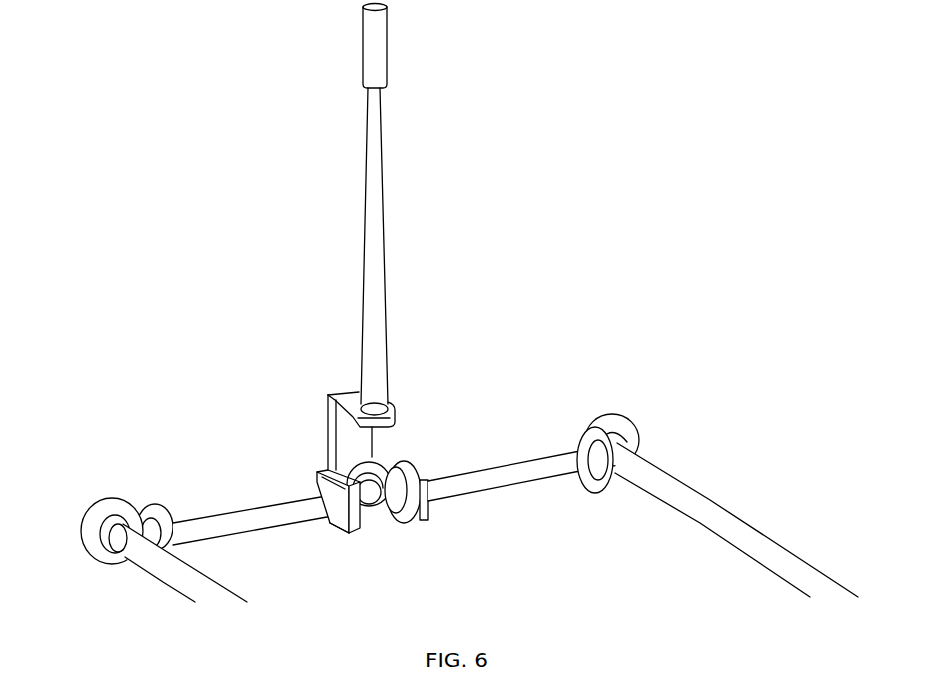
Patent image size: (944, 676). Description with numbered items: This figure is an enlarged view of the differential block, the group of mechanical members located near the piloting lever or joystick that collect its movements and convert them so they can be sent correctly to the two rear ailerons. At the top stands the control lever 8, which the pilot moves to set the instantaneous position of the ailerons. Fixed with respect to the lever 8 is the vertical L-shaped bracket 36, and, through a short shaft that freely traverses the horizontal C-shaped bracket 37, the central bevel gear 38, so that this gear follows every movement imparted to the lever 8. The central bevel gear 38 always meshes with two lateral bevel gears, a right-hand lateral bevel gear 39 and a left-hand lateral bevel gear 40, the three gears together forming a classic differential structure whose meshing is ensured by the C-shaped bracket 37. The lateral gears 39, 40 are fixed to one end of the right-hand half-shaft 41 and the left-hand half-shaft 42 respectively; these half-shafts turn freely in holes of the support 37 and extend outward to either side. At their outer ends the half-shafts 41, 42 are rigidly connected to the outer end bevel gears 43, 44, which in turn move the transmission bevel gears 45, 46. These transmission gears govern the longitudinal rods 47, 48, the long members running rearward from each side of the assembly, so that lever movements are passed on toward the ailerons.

The control lever 8 is at (388, 48).
The vertical L-shaped bracket 36 is at (328, 405).
The horizontal C-shaped bracket 37 is at (316, 478).
The central bevel gear 38 is at (375, 513).
The right-hand lateral bevel gear 39 is at (407, 525).
The left-hand lateral bevel gear 40 is at (350, 533).
The right-hand half-shaft 41 is at (497, 465).
The left-hand half-shaft 42 is at (243, 510).
The outer end bevel gear 43 is at (583, 490).
The outer end bevel gear 44 is at (152, 505).
The transmission bevel gear 45 is at (622, 412).
The transmission bevel gear 46 is at (84, 521).
The longitudinal rod 47 is at (687, 480).
The longitudinal rod 48 is at (187, 592).